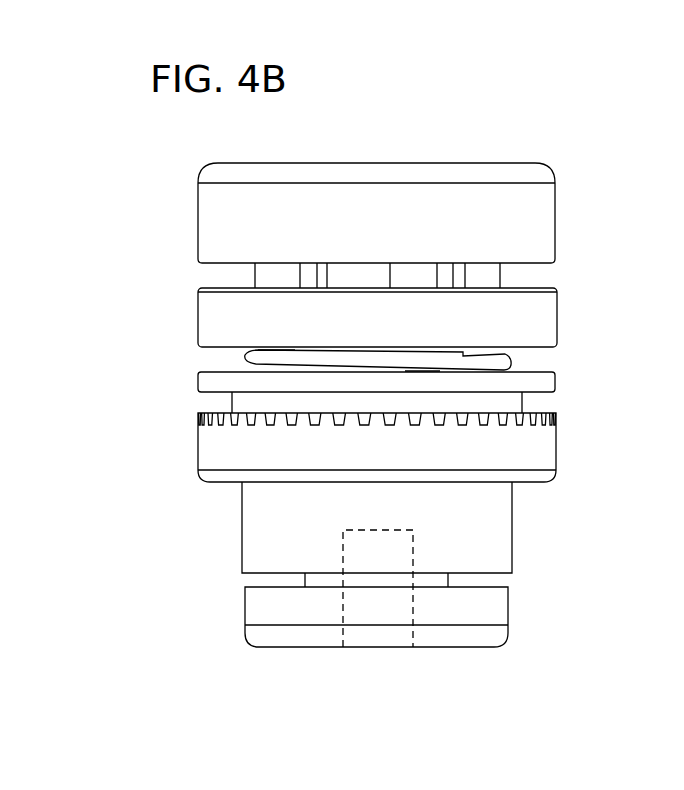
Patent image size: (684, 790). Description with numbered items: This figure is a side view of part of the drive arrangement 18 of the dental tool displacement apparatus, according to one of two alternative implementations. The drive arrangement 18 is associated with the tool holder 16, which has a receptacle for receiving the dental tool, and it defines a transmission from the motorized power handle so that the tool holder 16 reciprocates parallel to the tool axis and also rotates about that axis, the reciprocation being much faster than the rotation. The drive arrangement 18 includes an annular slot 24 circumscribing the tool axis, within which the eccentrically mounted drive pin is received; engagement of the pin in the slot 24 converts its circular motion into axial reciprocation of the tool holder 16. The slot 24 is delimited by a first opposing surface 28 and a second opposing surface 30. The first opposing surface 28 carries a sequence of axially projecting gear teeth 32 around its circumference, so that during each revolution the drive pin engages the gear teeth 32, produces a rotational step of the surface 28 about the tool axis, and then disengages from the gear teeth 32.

The drive arrangement 18 is at (507, 105).
The second opposing surface 30 is at (198, 389).
The gear teeth 32 is at (198, 414).
The first opposing surface 28 is at (198, 425).
The annular slot 24 is at (570, 409).
The tool holder 16 is at (380, 612).